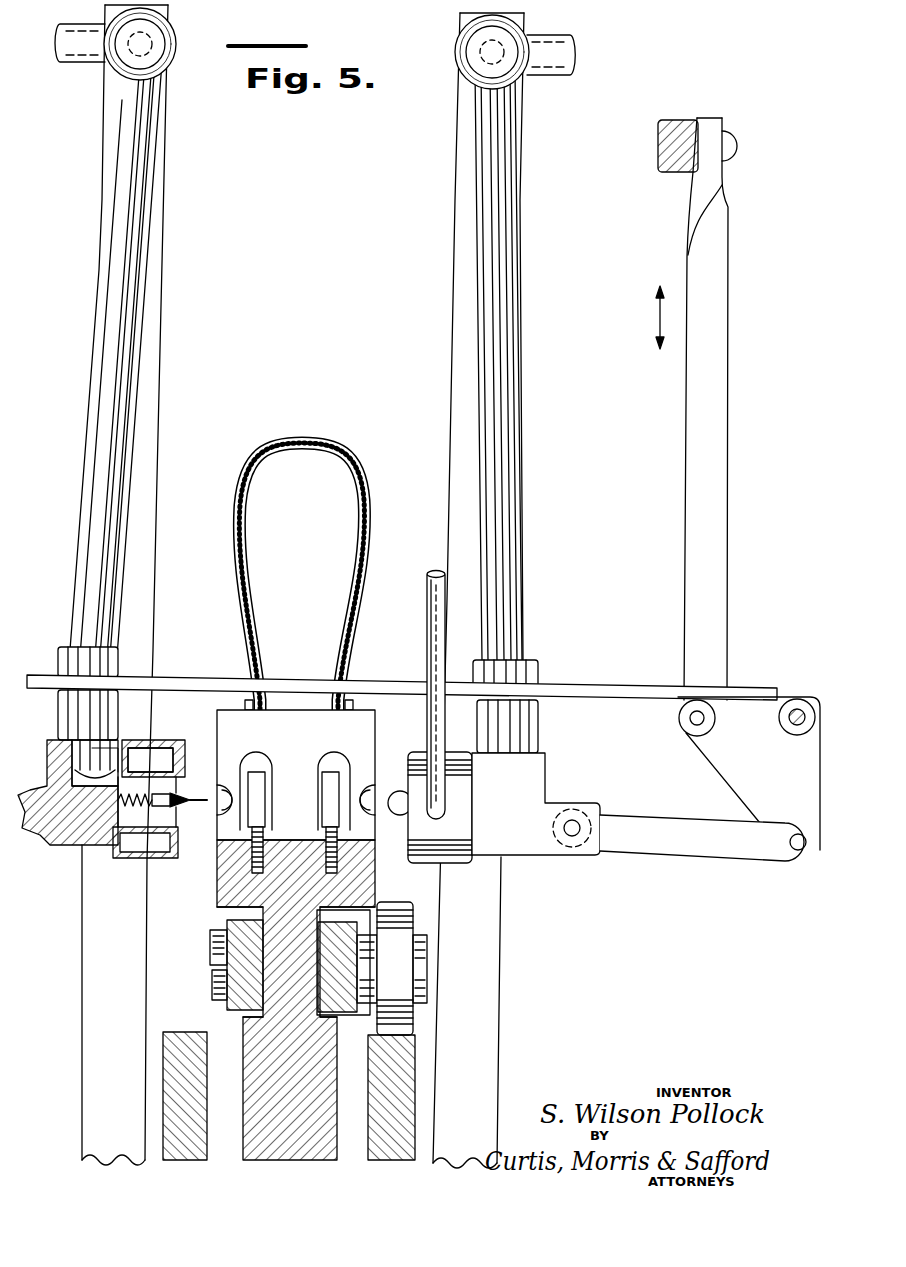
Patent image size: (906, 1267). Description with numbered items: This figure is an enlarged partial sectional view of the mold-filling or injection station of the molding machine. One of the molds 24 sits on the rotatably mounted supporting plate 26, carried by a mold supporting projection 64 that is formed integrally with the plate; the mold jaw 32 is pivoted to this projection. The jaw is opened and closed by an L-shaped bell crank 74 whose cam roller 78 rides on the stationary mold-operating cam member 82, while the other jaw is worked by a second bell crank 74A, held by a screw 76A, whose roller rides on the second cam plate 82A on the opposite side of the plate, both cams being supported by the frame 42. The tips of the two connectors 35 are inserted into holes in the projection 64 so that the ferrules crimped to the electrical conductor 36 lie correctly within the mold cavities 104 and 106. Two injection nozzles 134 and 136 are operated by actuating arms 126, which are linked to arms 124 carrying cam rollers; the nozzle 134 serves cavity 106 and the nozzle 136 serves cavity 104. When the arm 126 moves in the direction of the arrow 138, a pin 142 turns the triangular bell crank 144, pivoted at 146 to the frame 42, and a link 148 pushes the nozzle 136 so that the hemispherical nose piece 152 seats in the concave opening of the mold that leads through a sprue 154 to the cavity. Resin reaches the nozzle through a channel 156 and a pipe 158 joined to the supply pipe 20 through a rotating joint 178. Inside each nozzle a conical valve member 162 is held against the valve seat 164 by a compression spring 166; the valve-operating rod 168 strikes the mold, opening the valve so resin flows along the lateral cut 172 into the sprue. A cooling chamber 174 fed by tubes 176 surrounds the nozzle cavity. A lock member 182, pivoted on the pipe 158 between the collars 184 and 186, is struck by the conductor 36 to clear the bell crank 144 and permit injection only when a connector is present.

The pipe 20 is at (84, 62).
The mold 24 is at (288, 700).
The supporting plate 26 is at (263, 1048).
The mold jaw 32 is at (308, 747).
The connectors 35 is at (322, 866).
The electrical conductor 36 is at (272, 452).
The frame 42 is at (78, 965).
The mold supporting projection 64 is at (238, 893).
The bell crank 74 is at (343, 988).
The bell crank 74A is at (240, 996).
The screw 76A is at (212, 952).
The cam roller 78 is at (405, 928).
The mold-operating cam member 82 is at (395, 1095).
The second cam plate 82A is at (175, 1098).
The mold cavity 104 is at (348, 778).
The mold cavity 106 is at (245, 765).
The arm 124 is at (672, 128).
The actuating arm 126 is at (712, 452).
The injection nozzle 134 is at (62, 842).
The injection nozzle 136 is at (513, 846).
The arrow 138 is at (658, 318).
The pin 142 is at (689, 722).
The bell crank 144 is at (736, 778).
The pivot 146 is at (797, 705).
The link 148 is at (722, 846).
The nose piece 152 is at (400, 820).
The sprue 154 is at (234, 826).
The channel 156 is at (86, 780).
The pipe 158 is at (93, 387).
The conical valve member 162 is at (145, 842).
The valve seat 164 is at (183, 773).
The compression spring 166 is at (116, 815).
The valve-operating rod 168 is at (214, 803).
The lateral cut 172 is at (205, 810).
The cooling chamber 174 is at (160, 752).
The tube 176 is at (427, 603).
The rotating joint 178 is at (181, 64).
The lock member 182 is at (163, 685).
The collar 184 is at (62, 650).
The collar 186 is at (62, 712).